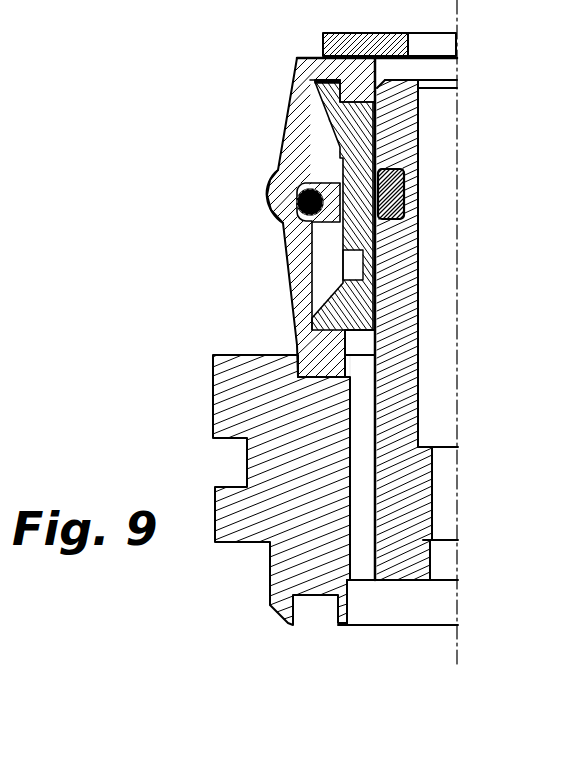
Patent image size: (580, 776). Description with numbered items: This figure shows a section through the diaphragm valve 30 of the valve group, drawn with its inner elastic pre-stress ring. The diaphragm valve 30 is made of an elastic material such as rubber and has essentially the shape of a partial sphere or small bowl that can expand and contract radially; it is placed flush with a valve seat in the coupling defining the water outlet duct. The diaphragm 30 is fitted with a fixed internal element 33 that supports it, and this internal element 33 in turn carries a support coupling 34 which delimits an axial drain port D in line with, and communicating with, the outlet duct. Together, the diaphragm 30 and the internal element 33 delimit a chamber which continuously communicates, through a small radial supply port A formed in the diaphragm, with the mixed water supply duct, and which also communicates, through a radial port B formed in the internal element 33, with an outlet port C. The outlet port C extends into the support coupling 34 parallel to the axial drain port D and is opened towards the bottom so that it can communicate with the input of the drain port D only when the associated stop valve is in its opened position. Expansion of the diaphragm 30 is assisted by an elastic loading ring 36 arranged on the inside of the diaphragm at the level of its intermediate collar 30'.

The diaphragm valve 30 is at (298, 217).
The intermediate collar 30' is at (241, 184).
The fixed internal element 33 is at (395, 128).
The support coupling 34 is at (228, 384).
The elastic loading ring 36 is at (285, 227).
The radial supply port A is at (297, 295).
The radial port B is at (370, 267).
The outlet port C is at (367, 498).
The axial drain port D is at (440, 380).